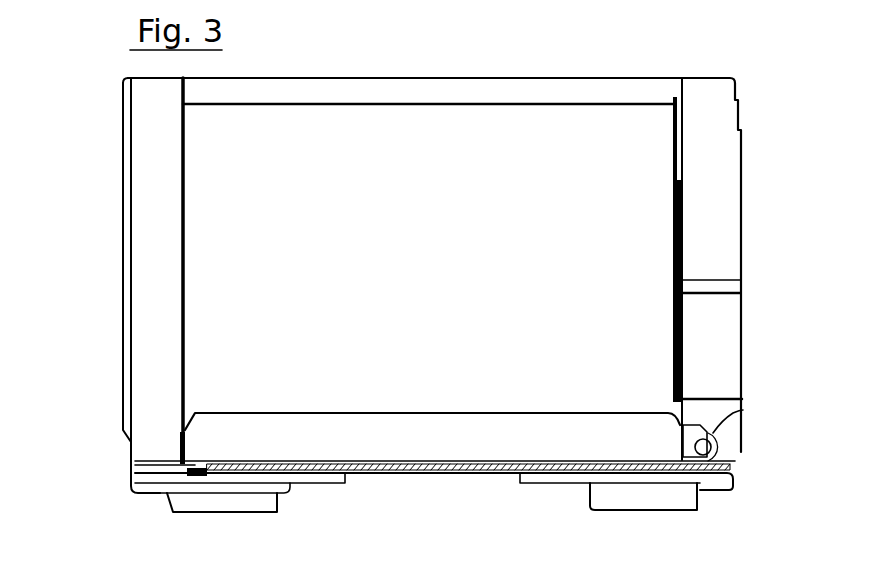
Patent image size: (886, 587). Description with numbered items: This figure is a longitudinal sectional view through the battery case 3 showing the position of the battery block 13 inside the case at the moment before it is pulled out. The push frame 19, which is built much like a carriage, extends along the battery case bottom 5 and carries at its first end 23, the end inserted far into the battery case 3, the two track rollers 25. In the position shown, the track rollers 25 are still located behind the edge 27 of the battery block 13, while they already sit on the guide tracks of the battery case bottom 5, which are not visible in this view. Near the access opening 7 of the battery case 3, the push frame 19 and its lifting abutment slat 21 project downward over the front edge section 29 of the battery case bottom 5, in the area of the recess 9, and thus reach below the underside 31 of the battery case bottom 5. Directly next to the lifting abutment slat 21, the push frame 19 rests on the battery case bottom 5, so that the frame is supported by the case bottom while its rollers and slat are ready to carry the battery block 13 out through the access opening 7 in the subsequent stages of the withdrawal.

The battery case 3 is at (317, 95).
The battery block 13 is at (425, 145).
The edge of the battery block 27 is at (668, 258).
The access opening 7 is at (163, 353).
The recess 9 is at (165, 470).
The front edge section of the battery case bottom 29 is at (222, 463).
The push frame 19 is at (426, 426).
The battery case bottom 5 is at (500, 470).
The underside of the battery case bottom 31 is at (378, 470).
The lifting abutment slat 21 is at (192, 475).
The first end of the push frame 23 is at (690, 425).
The track rollers 25 is at (745, 407).